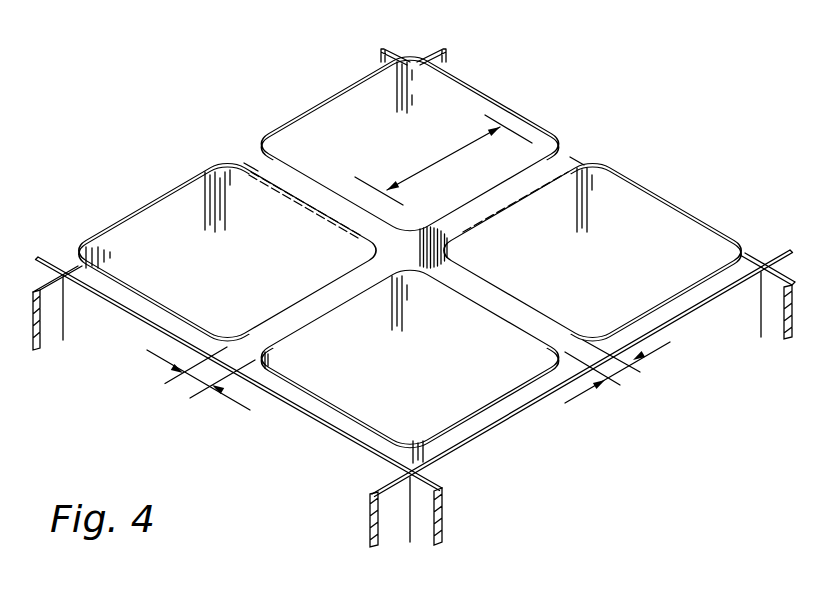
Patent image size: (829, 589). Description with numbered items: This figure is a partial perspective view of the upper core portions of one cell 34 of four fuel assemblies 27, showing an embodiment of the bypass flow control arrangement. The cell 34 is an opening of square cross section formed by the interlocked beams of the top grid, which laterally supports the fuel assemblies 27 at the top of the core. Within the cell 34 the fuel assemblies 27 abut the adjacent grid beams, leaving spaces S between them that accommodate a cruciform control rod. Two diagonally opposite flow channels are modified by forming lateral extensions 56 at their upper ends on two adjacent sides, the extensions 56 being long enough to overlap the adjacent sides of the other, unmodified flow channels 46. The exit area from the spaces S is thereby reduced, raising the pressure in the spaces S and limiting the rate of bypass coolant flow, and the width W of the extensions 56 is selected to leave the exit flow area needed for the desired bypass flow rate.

The cell 34 is at (580, 72).
The flow channel 46 is at (342, 92).
The fuel assembly 27 is at (680, 200).
The lateral extension 56 is at (256, 166).
The width of the extensions W is at (443, 160).
The spaces S is at (408, 375).